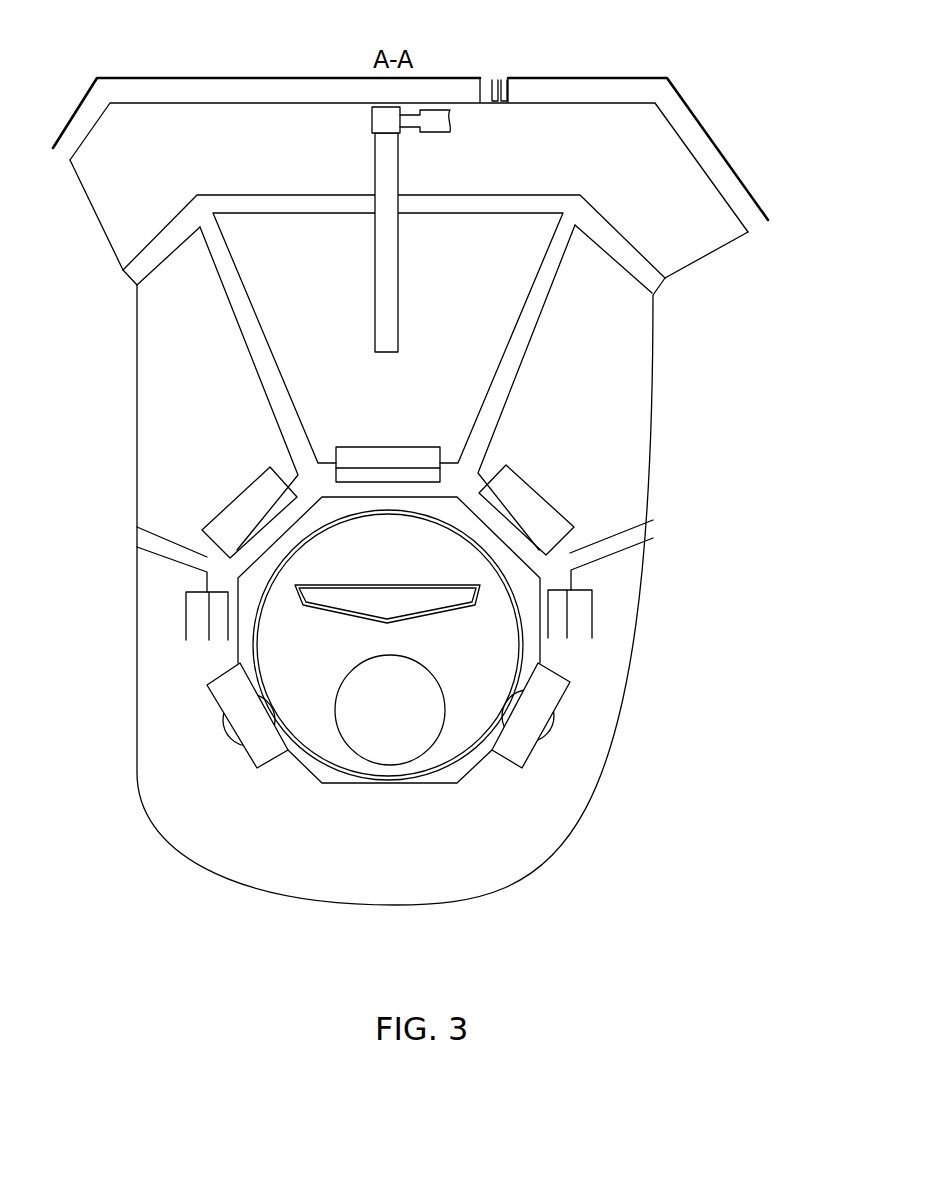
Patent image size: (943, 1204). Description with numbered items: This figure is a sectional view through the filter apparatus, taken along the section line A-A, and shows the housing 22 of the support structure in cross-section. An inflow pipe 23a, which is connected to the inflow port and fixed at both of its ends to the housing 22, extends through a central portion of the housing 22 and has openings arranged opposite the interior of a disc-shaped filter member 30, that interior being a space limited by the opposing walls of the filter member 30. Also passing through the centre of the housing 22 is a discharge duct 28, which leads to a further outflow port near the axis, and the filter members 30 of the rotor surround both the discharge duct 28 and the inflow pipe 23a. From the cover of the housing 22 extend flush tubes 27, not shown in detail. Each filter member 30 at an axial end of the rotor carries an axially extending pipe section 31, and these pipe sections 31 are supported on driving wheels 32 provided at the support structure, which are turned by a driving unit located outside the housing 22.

The housing 22 is at (702, 148).
The flush tubes 27 is at (387, 163).
The disc-shaped filter member 30 is at (607, 380).
The discharge duct 28 is at (447, 597).
The pipe section 31 is at (518, 627).
The driving wheels 32 is at (230, 732).
The inflow pipe 23a is at (383, 740).